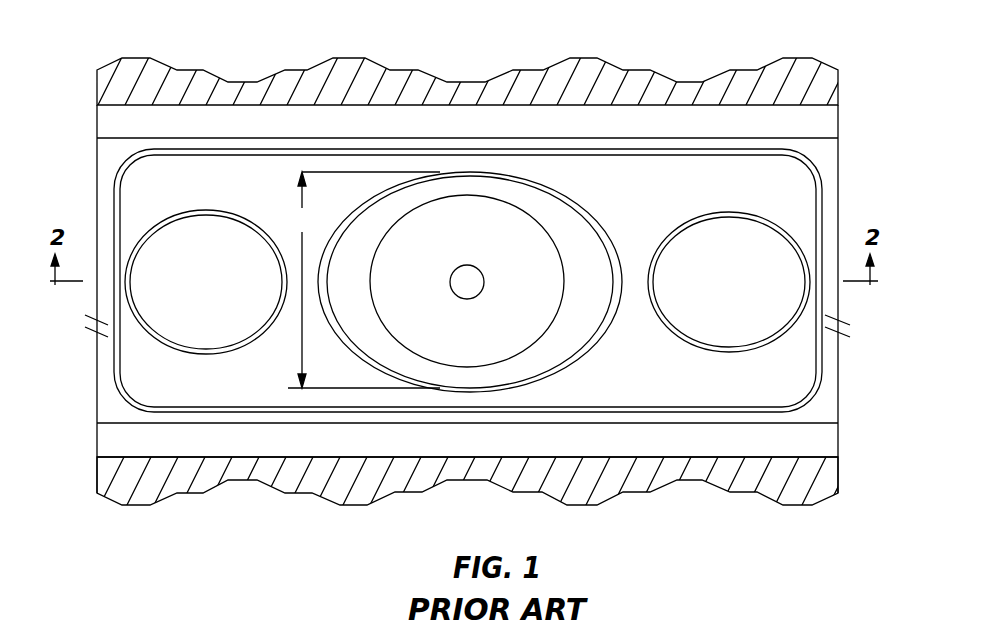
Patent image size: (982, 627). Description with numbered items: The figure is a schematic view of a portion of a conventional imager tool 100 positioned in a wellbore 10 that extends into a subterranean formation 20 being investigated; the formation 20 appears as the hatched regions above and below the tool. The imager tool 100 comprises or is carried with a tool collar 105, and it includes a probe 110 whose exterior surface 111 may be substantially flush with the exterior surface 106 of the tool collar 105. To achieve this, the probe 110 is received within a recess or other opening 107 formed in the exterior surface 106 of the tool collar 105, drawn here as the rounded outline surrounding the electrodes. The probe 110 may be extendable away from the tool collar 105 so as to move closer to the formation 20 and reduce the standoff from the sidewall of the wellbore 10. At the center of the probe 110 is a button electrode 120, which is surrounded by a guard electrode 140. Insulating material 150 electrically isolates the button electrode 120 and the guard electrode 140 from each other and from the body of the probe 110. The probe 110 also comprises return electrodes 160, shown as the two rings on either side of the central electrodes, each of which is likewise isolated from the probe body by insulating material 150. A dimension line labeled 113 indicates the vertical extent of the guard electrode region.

The wellbore 10 is at (125, 123).
The subterranean formation 20 is at (137, 66).
The imager tool 100 is at (330, 112).
The tool collar 105 is at (192, 425).
The exterior surface of the tool collar 106 is at (118, 412).
The opening 107 is at (278, 412).
The probe 110 is at (468, 408).
The exterior surface of the probe 111 is at (368, 397).
The width dimension 113 is at (362, 280).
The button electrode 120 is at (485, 279).
The guard electrode 140 is at (470, 250).
The insulating material 150 is at (467, 195).
The return electrode 160 is at (467, 230).